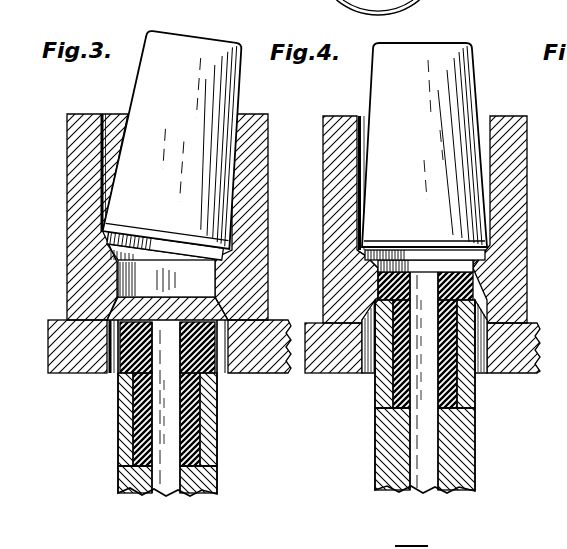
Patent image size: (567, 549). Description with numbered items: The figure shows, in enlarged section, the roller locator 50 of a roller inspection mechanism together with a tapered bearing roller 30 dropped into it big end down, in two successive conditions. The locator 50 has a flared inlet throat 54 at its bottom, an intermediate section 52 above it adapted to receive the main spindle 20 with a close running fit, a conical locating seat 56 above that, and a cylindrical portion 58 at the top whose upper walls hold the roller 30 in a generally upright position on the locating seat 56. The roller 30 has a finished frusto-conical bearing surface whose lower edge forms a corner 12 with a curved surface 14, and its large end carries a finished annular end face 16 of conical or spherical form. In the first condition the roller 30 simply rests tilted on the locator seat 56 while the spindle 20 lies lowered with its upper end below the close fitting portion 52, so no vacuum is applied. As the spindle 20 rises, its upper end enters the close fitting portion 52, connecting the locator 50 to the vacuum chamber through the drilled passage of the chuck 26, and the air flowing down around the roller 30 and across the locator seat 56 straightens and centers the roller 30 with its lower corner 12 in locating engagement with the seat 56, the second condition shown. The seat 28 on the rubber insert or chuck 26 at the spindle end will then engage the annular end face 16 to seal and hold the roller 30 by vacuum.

In FIG. 4, the corner 12 is at (367, 247).
In FIG. 3, the curved surface 14 is at (110, 236).
In FIG. 4, the curved surface 14 is at (566, 198).
In FIG. 3, the annular end face 16 is at (113, 258).
In FIG. 3, the main spindle 20 is at (218, 455).
In FIG. 3, the insert or chuck 26 is at (217, 374).
In FIG. 4, the insert or chuck 26 is at (476, 290).
In FIG. 3, the seat 28 is at (199, 330).
In FIG. 4, the seat 28 is at (478, 262).
In FIG. 3, the tapered bearing roller 30 is at (180, 138).
In FIG. 4, the tapered bearing roller 30 is at (424, 145).
In FIG. 3, the roller locator 50 is at (68, 212).
In FIG. 3, the intermediate section 52 is at (216, 280).
In FIG. 4, the intermediate section 52 is at (474, 270).
In FIG. 3, the flared inlet throat 54 is at (228, 316).
In FIG. 4, the flared inlet throat 54 is at (483, 312).
In FIG. 3, the conical locating seat 56 is at (216, 250).
In FIG. 4, the conical locating seat 56 is at (488, 252).
In FIG. 3, the cylindrical portion 58 is at (106, 128).
In FIG. 4, the cylindrical portion 58 is at (483, 120).